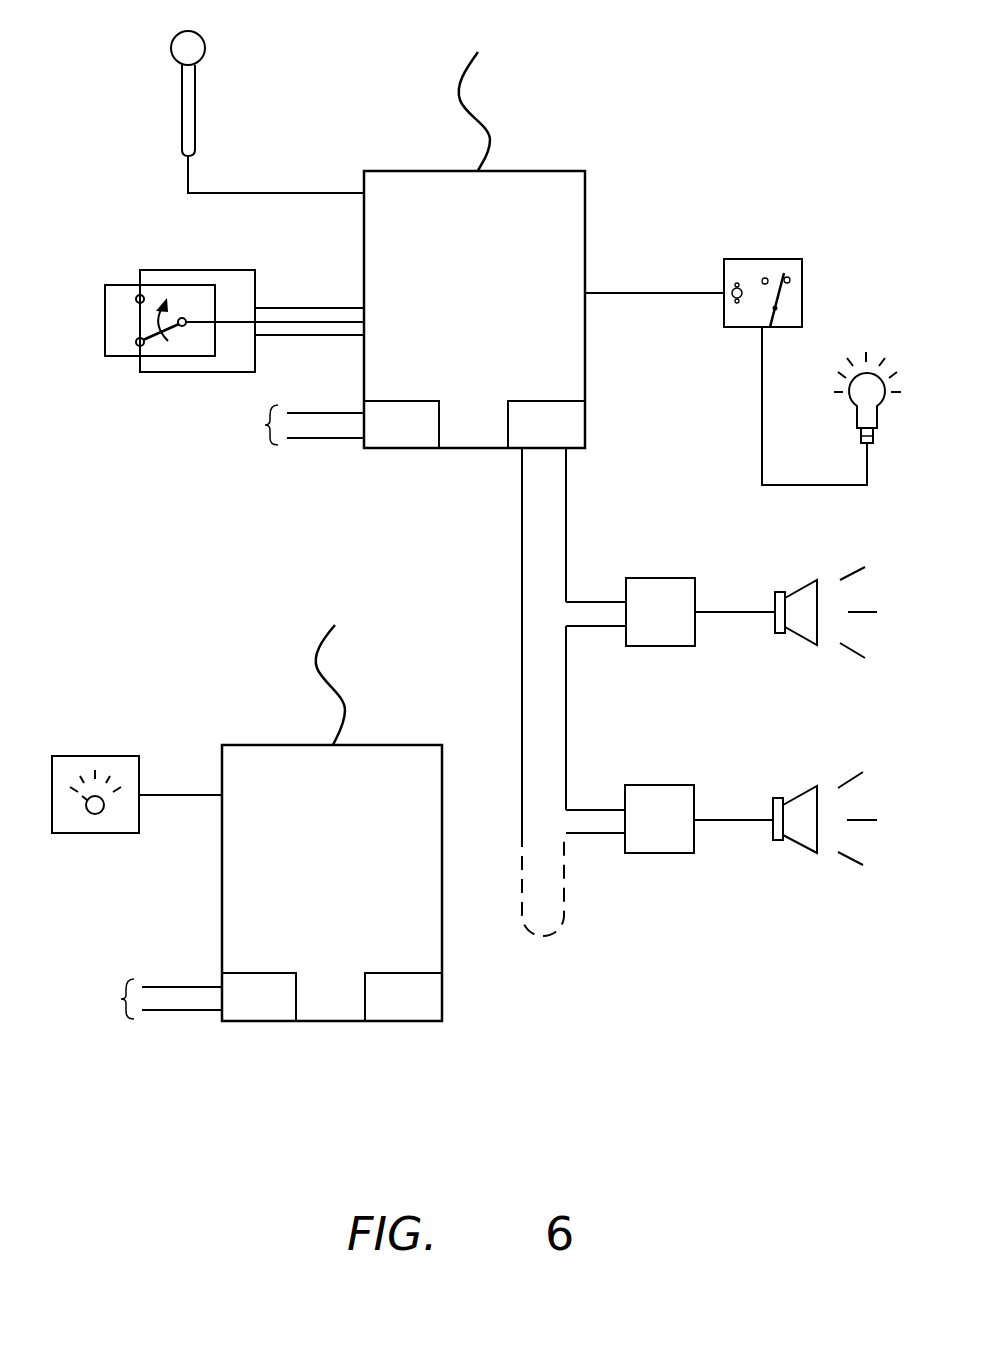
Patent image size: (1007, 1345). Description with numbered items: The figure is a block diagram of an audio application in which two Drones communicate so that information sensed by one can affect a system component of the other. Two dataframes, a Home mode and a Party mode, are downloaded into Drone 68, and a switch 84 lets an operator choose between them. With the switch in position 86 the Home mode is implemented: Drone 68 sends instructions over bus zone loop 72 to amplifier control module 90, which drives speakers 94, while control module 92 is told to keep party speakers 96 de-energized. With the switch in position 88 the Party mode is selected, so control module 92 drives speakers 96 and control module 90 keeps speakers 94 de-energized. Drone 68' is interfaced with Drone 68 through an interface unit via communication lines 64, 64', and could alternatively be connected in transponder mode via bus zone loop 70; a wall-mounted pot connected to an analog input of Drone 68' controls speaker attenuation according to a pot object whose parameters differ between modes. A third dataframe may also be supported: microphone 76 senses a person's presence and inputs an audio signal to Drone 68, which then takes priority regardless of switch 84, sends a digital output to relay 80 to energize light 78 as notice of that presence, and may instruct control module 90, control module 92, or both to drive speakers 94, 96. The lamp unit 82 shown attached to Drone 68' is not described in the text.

The communication line 64 is at (516, 111).
The communication line 64' is at (366, 685).
The Drone 68 is at (524, 309).
The Drone 68' is at (388, 894).
The bus zone loop 70 is at (265, 425).
The bus zone loop 72 is at (522, 593).
The microphone 76 is at (171, 42).
The light 78 is at (883, 373).
The relay 80 is at (802, 283).
The indicator lamp unit 82 is at (112, 756).
The switch 84 is at (105, 322).
The position 86 is at (136, 299).
The position 88 is at (138, 346).
The amplifier control module 90 is at (665, 588).
The control module 92 is at (658, 793).
The speakers 94 is at (795, 633).
The party speakers 96 is at (797, 840).